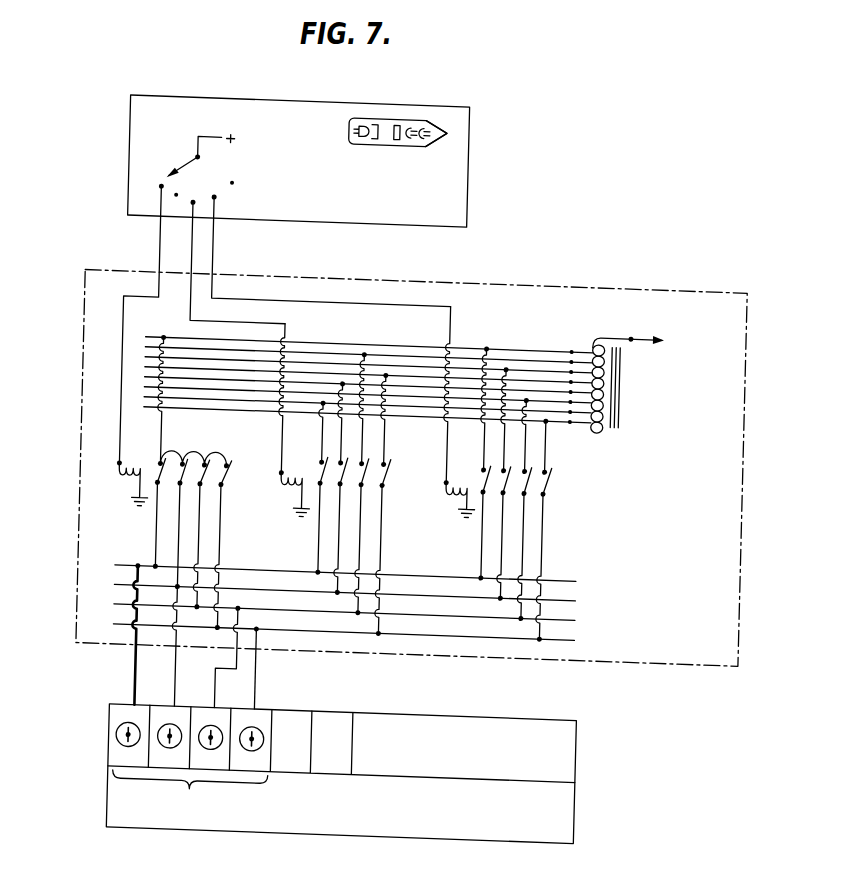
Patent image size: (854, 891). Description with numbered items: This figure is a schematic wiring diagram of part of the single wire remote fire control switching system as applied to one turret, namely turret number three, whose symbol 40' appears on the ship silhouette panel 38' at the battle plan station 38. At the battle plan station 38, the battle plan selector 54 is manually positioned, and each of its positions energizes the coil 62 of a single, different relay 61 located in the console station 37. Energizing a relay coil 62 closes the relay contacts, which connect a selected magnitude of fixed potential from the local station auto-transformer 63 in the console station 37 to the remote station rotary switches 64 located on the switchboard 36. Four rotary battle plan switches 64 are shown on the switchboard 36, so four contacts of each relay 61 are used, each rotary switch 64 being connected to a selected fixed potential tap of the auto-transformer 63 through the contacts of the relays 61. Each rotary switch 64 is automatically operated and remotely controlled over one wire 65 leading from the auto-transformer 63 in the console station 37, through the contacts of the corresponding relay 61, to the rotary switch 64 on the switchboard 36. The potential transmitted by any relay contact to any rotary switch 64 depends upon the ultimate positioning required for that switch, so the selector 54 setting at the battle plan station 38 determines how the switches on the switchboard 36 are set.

The switchboard 36 is at (581, 749).
The console station 37 is at (695, 282).
The battle plan station 38 is at (320, 162).
The ship silhouette panel 38' is at (454, 116).
The turret symbol 40' is at (398, 116).
The battle plan selector 54 is at (135, 182).
The relays 61 is at (395, 529).
The relay coil 62 is at (142, 461).
The local station auto-transformer 63 is at (621, 412).
The rotary switch 64 is at (122, 736).
The wire 65 is at (124, 683).